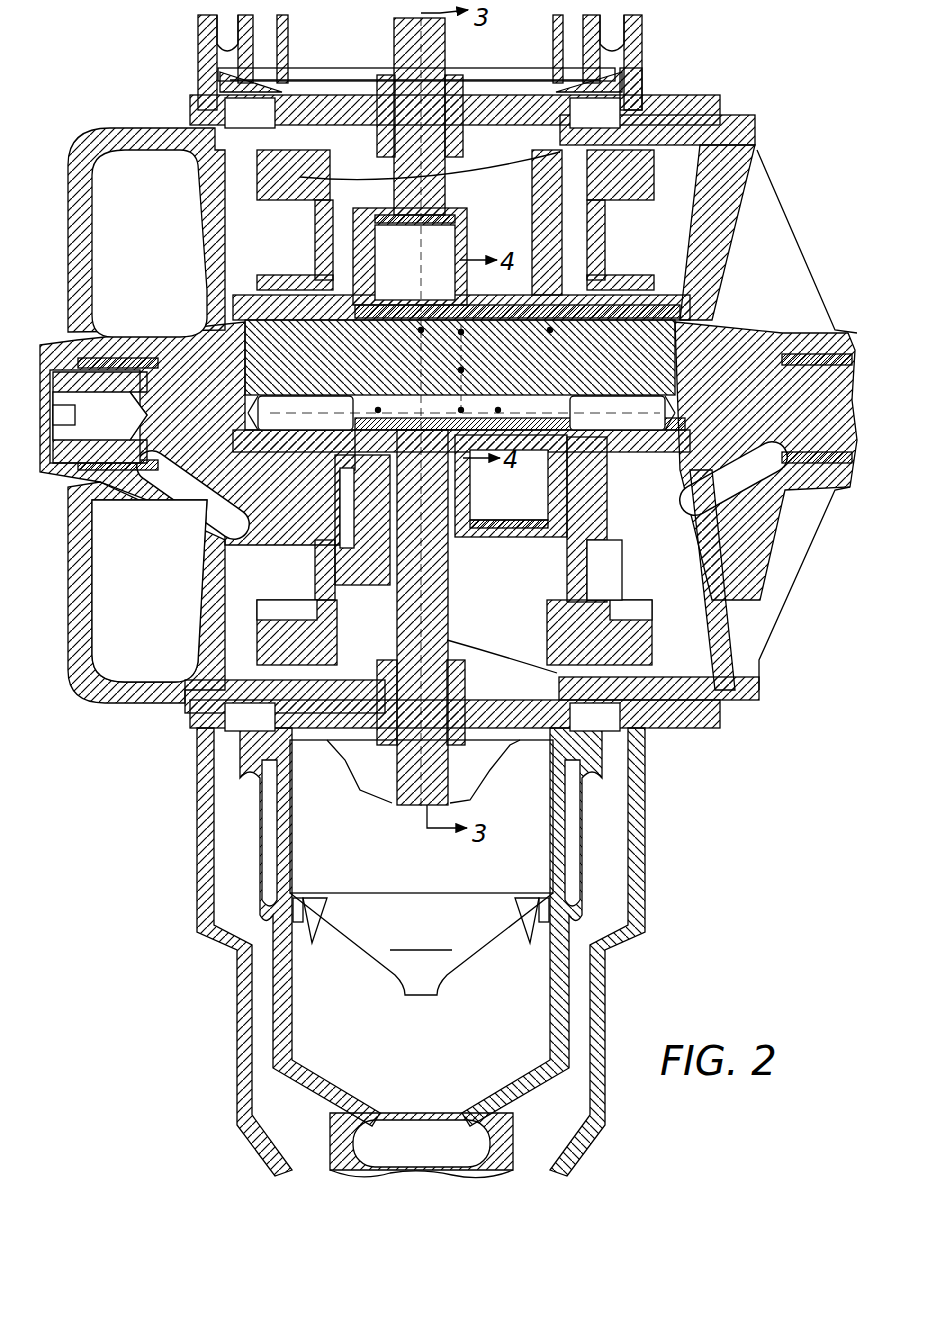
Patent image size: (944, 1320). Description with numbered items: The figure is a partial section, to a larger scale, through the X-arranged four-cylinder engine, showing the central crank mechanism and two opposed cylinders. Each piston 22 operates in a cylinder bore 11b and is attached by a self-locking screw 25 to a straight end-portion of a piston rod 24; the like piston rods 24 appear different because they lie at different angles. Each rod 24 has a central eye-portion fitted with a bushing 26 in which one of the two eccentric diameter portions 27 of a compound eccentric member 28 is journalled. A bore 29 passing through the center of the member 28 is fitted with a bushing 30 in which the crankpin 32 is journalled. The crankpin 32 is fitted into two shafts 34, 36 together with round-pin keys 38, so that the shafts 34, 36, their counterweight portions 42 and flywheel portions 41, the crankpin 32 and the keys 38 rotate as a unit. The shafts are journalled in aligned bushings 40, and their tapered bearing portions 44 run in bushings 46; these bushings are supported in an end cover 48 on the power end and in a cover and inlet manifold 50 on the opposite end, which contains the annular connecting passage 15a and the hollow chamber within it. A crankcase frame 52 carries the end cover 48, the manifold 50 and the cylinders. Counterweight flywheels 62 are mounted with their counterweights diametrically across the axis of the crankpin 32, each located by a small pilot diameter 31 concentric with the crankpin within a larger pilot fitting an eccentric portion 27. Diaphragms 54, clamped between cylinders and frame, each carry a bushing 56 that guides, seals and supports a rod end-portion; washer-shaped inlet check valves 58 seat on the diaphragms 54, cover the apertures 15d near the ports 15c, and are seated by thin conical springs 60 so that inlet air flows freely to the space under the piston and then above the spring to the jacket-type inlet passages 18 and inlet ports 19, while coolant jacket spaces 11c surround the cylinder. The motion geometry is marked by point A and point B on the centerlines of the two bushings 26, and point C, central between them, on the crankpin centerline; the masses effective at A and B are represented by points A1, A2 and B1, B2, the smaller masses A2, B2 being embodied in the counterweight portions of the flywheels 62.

The cylinder bore 11b is at (290, 45).
The coolant jacket space 11c is at (421, 1140).
The annular connecting passage 15a is at (149, 416).
The port 15c is at (422, 414).
The aperture 15d is at (235, 104).
The jacket-type inlet passage 18 is at (420, 570).
The inlet port 19 is at (421, 933).
The piston 22 is at (421, 816).
The piston rod 24 is at (447, 45).
The self-locking screw 25 is at (412, 988).
The bushing 26 is at (418, 255).
The eccentric diameter portion 27 is at (432, 238).
The compound eccentric member 28 is at (486, 405).
The bore 29 is at (415, 258).
The bushing 30 is at (520, 414).
The small pilot diameter 31 is at (517, 352).
The crankpin 32 is at (460, 367).
The shaft 34 is at (760, 462).
The shaft 36 is at (85, 442).
The round-pin key 38 is at (461, 413).
The bushing 40 is at (292, 295).
The flywheel portion 41 is at (262, 186).
The counterweight portion 42 is at (547, 630).
The bearing portion 44 is at (120, 358).
The bushing 46 is at (128, 372).
The end cover 48 is at (766, 420).
The cover and inlet manifold 50 is at (118, 128).
The crankcase frame 52 is at (230, 115).
The diaphragm 54 is at (485, 125).
The bushing 56 is at (463, 157).
The inlet check valve 58 is at (640, 85).
The spring 60 is at (545, 78).
The counterweight flywheel 62 is at (532, 187).
The point A1 is at (402, 343).
The point A is at (468, 341).
The point A2 is at (557, 344).
The point C is at (477, 373).
The point B2 is at (394, 407).
The point B is at (471, 407).
The point B1 is at (514, 407).